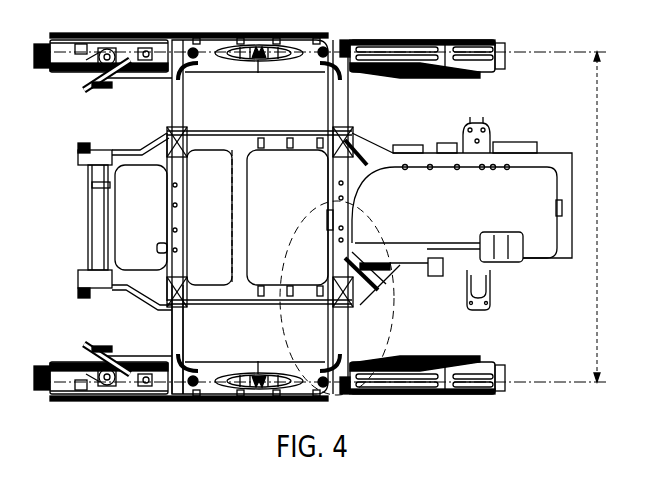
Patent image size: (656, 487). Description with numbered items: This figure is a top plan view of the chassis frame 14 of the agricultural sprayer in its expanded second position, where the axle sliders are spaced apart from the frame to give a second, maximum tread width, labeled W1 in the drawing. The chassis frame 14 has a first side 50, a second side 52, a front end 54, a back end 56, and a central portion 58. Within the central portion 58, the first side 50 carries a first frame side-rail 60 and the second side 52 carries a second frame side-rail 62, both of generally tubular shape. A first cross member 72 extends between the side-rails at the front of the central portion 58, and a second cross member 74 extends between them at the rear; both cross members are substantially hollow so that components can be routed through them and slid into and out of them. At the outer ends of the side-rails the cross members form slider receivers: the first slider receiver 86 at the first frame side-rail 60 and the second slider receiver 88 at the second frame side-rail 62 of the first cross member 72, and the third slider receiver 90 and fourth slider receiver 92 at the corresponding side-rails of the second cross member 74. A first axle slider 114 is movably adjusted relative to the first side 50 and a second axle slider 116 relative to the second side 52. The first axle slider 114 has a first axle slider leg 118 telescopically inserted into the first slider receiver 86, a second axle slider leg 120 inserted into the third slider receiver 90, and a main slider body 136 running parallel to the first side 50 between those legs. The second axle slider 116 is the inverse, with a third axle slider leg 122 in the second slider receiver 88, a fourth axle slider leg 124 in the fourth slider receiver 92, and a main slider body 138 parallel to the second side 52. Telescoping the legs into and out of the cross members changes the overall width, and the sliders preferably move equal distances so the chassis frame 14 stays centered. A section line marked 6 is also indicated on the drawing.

The chassis frame 14 is at (445, 22).
The second axle slider 116 is at (176, 22).
The main slider body 138 is at (222, 65).
The second side 52 is at (272, 25).
The back end 56 is at (578, 118).
The second slider receiver 88 is at (165, 127).
The third axle slider leg 122 is at (178, 108).
The second frame side-rail 62 is at (237, 150).
The fourth axle slider leg 124 is at (340, 113).
The fourth slider receiver 92 is at (360, 118).
The front end 54 is at (60, 218).
The first cross member 72 is at (173, 194).
The second cross member 74 is at (343, 192).
The section line 6 is at (320, 205).
The first slider receiver 86 is at (158, 312).
The first axle slider leg 118 is at (182, 318).
The main slider body 136 is at (223, 367).
The first frame side-rail 60 is at (292, 293).
The third slider receiver 90 is at (358, 312).
The second axle slider leg 120 is at (398, 343).
The first axle slider 114 is at (189, 416).
The central portion 58 is at (207, 412).
The first side 50 is at (258, 414).
The track width W1 is at (597, 265).